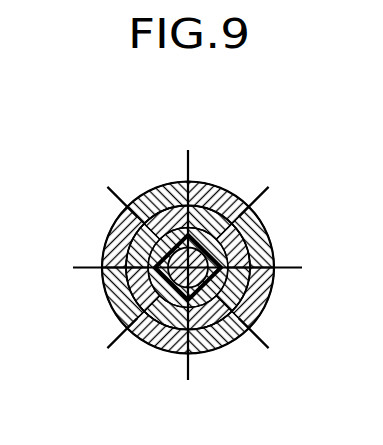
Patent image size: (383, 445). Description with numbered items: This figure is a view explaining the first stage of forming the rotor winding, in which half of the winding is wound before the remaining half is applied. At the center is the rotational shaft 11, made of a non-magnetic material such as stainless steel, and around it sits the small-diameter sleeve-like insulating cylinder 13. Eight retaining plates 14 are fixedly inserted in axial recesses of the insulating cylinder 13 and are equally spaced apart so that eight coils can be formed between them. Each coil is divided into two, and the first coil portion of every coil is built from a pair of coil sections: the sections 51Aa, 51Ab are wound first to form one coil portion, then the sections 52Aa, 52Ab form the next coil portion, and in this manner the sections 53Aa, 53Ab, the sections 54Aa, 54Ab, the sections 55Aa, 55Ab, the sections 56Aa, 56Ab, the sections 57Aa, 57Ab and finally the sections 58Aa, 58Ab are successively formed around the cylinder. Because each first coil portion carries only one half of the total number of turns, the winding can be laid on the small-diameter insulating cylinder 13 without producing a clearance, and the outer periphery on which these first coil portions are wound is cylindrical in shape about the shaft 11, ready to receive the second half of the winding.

The rotational shaft 11 is at (105, 266).
The insulating cylinder 13 is at (157, 181).
The retaining plate 14 is at (316, 198).
The coil section 51Aa is at (207, 184).
The coil section 52Aa is at (270, 244).
The coil section 53Aa is at (271, 288).
The coil section 54Aa is at (236, 346).
The coil section 55Aa is at (134, 341).
The coil section 56Aa is at (118, 308).
The coil section 57Aa is at (117, 243).
The coil section 58Aa is at (170, 181).
The coil section 51Ab is at (205, 352).
The coil section 52Ab is at (172, 352).
The coil section 53Ab is at (115, 284).
The coil section 54Ab is at (123, 208).
The coil section 55Ab is at (148, 190).
The coil section 56Ab is at (241, 201).
The coil section 57Ab is at (256, 215).
The coil section 58Ab is at (262, 313).